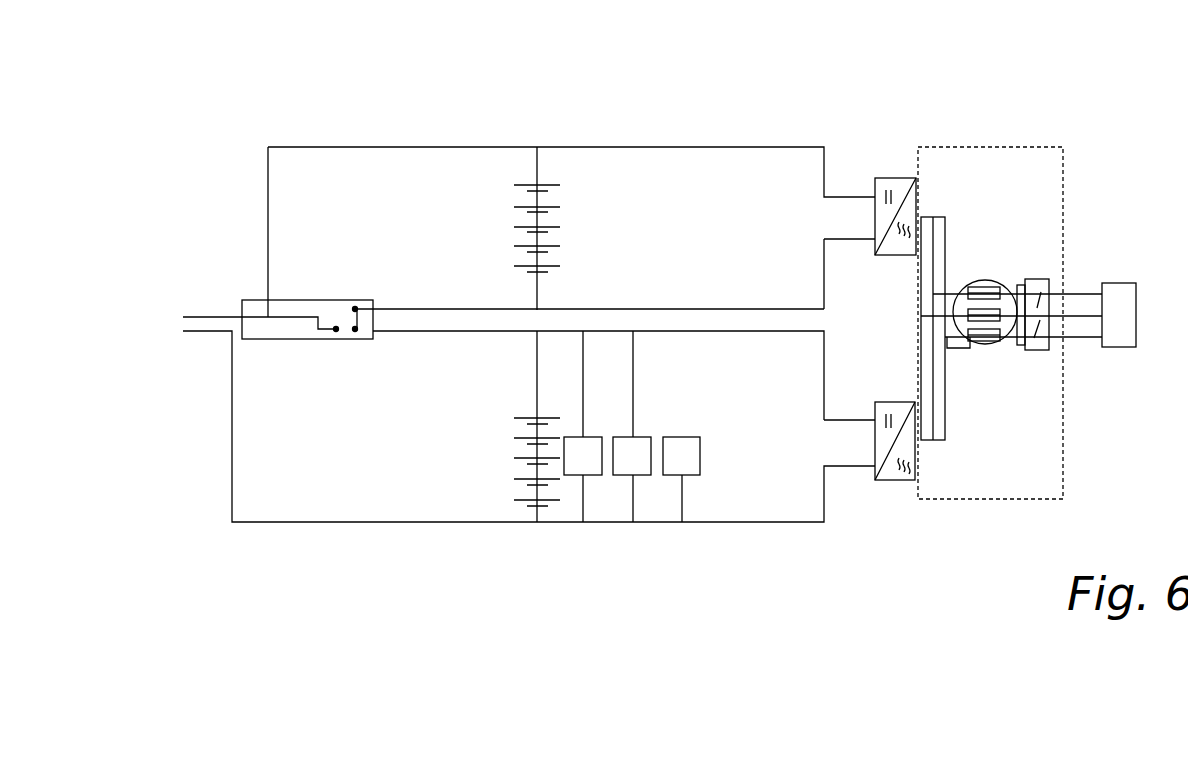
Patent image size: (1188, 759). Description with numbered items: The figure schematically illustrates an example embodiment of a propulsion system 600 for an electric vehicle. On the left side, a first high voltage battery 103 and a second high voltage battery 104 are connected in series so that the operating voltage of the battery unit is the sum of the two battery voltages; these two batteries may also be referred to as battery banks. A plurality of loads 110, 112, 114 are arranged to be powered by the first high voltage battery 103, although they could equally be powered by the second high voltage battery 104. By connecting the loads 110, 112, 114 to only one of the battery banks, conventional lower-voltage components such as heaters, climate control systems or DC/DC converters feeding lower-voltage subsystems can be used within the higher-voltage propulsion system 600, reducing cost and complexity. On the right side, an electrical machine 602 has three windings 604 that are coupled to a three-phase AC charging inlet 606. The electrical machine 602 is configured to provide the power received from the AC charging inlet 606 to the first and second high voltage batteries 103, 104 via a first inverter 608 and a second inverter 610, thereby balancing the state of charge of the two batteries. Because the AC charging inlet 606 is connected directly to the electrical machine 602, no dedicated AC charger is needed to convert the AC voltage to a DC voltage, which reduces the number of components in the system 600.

The first high voltage battery 103 is at (530, 462).
The second high voltage battery 104 is at (546, 230).
The load 110 is at (587, 437).
The load 112 is at (637, 437).
The load 114 is at (692, 437).
The propulsion system 600 is at (1021, 267).
The electrical machine 602 is at (1003, 281).
The windings 604 is at (1020, 350).
The three-phase AC charging inlet 606 is at (1118, 283).
The inverter 608 is at (880, 178).
The inverter 610 is at (882, 402).